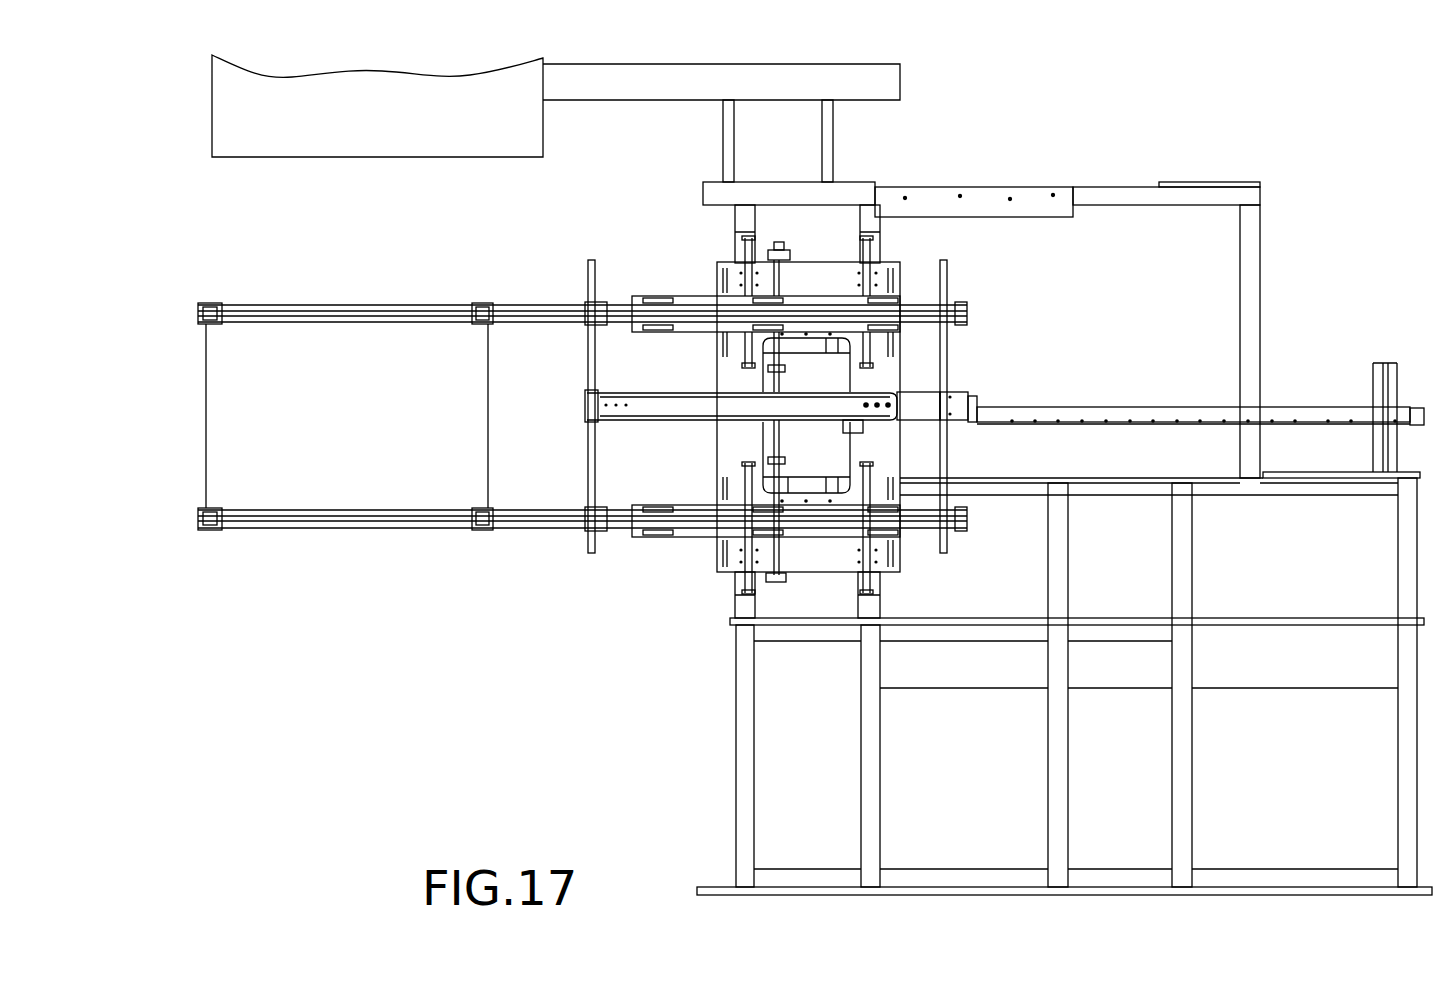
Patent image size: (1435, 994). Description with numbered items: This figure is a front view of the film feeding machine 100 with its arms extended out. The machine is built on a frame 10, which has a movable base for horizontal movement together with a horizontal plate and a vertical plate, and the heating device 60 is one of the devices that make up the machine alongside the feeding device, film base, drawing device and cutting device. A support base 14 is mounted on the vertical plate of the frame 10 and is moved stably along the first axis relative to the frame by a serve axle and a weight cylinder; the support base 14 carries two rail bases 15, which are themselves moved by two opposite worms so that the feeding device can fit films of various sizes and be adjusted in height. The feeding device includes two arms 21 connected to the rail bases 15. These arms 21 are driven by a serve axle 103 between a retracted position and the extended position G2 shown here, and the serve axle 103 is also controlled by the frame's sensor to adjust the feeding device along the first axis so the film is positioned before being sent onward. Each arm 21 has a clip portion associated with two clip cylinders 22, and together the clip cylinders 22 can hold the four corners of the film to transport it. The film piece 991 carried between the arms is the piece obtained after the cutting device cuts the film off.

The film feeding machine 100 is at (781, 475).
The heating device 60 is at (205, 120).
The frame 10 is at (1018, 186).
The support base 14 is at (828, 258).
The rail bases 15 is at (690, 298).
The arms 21 is at (355, 303).
The clip cylinders 22 is at (213, 302).
The film piece 991 is at (238, 425).
The serve axle 103 is at (856, 428).
The extended position G2 is at (548, 463).